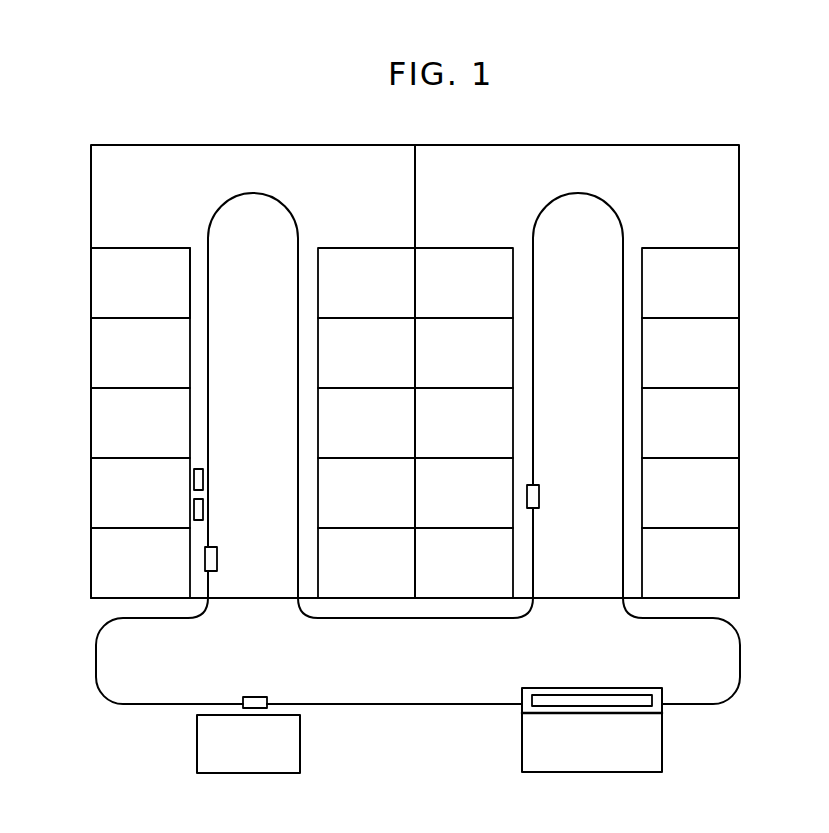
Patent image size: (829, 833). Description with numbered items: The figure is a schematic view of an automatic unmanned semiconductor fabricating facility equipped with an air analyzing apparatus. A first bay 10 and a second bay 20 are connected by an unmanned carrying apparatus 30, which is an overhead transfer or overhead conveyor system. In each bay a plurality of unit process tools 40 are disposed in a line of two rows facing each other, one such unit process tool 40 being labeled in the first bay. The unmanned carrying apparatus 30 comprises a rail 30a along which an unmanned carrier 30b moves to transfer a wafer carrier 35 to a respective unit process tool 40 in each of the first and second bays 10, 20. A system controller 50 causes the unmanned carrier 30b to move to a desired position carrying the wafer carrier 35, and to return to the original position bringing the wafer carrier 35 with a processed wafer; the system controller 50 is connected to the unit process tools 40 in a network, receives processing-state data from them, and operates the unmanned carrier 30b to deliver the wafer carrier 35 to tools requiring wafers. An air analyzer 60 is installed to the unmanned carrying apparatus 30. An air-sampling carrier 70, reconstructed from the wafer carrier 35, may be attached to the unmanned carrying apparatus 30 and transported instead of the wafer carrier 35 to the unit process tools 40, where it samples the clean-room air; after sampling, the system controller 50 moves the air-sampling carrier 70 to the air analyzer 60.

The first bay 10 is at (272, 177).
The second bay 20 is at (591, 172).
The unmanned carrying apparatus 30 is at (740, 656).
The rail 30a is at (286, 702).
The unmanned carrier 30b is at (258, 697).
The wafer carrier 35 is at (203, 479).
The unit process tool 40 is at (91, 287).
The system controller 50 is at (300, 748).
The air analyzer 60 is at (662, 748).
The air-sampling carrier 70 is at (640, 690).